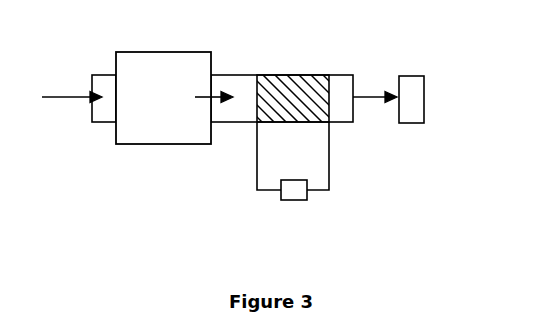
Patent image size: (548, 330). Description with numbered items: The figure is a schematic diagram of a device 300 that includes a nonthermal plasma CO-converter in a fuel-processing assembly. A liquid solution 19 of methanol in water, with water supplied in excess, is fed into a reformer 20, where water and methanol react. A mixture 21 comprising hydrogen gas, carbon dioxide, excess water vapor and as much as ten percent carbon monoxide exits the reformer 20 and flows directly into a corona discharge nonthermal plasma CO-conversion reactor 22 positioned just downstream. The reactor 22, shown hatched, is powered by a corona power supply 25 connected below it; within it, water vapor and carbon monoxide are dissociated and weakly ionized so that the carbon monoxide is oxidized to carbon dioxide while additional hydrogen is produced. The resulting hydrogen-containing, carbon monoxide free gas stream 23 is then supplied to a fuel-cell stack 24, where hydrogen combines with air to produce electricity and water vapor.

The liquid solution 19 is at (72, 90).
The reformer 20 is at (133, 131).
The mixture 21 is at (213, 91).
The nonthermal plasma CO-conversion reactor 22 is at (300, 75).
The carbon monoxide free gas stream 23 is at (365, 92).
The fuel-cell stack 24 is at (417, 108).
The corona power supply 25 is at (294, 193).
The device 300 is at (177, 187).